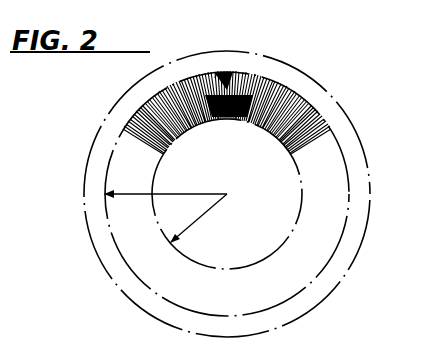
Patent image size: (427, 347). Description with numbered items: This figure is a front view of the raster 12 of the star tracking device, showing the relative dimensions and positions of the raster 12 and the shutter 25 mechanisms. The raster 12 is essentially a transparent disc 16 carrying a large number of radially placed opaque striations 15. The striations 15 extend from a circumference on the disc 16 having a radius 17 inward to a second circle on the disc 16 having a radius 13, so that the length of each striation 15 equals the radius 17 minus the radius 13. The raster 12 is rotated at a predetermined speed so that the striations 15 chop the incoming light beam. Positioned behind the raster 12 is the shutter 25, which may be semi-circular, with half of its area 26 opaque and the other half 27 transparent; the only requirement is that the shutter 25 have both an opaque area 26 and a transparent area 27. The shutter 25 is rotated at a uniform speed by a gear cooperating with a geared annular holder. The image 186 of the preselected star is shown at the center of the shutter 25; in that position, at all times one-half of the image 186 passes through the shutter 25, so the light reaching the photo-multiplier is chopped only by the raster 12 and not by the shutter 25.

The raster 12 is at (358, 133).
The radius 13 is at (184, 236).
The striations 15 is at (301, 144).
The transparent disc 16 is at (257, 201).
The radius 17 is at (203, 194).
The shutter 25 is at (277, 82).
The opaque area 26 is at (228, 118).
The transparent area 27 is at (227, 72).
The star image 186 is at (217, 72).